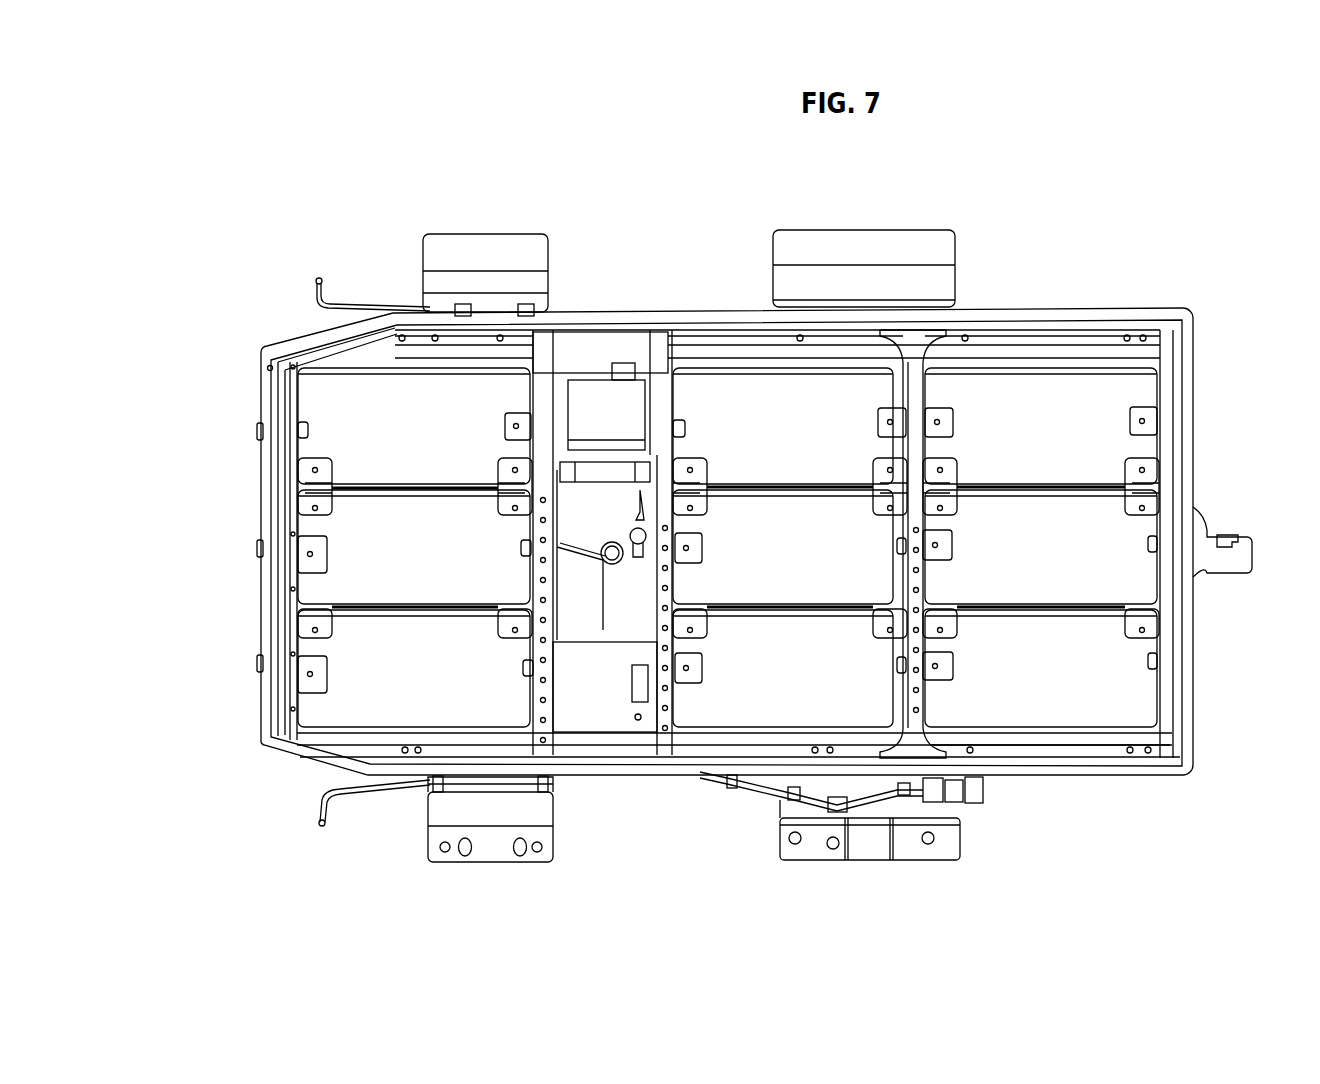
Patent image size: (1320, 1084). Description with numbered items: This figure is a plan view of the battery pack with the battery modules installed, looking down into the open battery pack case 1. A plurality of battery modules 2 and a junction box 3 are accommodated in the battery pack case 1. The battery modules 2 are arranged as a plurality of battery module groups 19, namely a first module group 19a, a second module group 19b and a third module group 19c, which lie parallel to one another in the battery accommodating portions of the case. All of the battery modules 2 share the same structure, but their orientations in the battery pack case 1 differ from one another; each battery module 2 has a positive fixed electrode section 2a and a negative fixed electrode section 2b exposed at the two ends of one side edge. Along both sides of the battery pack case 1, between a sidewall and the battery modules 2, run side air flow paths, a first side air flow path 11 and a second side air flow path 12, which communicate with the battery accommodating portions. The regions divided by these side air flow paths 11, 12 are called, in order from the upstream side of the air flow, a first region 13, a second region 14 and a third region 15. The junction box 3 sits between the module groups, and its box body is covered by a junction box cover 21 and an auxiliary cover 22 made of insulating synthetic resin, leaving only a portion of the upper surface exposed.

The battery pack case 1 is at (1122, 303).
The battery module 2 is at (407, 393).
The positive fixed electrode section 2a is at (317, 477).
The negative fixed electrode section 2b is at (508, 458).
The junction box 3 is at (612, 352).
The first side air flow path 11 is at (284, 733).
The second side air flow path 12 is at (307, 357).
The first region 13 is at (430, 747).
The second region 14 is at (753, 753).
The third region 15 is at (1020, 753).
The battery module group 19 is at (777, 257).
The first module group 19a is at (457, 360).
The second module group 19b is at (740, 352).
The third module group 19c is at (1023, 350).
The junction box cover 21 is at (578, 533).
The auxiliary cover 22 is at (607, 740).